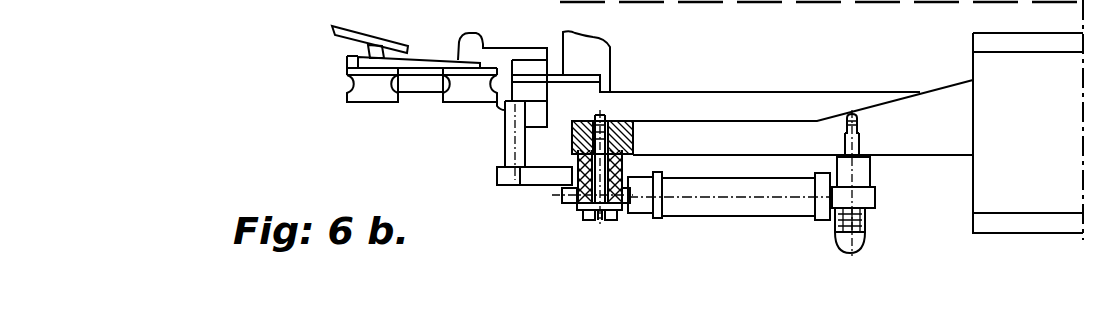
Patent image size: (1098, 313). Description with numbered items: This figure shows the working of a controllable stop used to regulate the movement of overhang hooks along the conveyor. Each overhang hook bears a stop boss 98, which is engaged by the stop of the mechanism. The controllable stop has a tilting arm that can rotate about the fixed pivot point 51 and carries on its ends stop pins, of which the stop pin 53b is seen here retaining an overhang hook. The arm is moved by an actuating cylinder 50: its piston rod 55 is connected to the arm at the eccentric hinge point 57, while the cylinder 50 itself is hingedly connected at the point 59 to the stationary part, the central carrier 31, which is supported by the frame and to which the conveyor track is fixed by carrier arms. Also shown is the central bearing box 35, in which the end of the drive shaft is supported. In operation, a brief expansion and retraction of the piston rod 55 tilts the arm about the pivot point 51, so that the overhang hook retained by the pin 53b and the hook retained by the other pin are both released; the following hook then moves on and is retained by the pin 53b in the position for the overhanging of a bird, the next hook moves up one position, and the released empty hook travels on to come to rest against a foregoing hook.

The central carrier 31 is at (905, 148).
The central bearing box 35 is at (998, 205).
The actuating cylinder 50 is at (752, 208).
The fixed pivot point 51 is at (598, 206).
The stop pin 53b is at (505, 148).
The piston rod 55 is at (630, 198).
The eccentric hinge point 57 is at (565, 204).
The hinge point 59 is at (853, 202).
The stop boss 98 is at (497, 105).